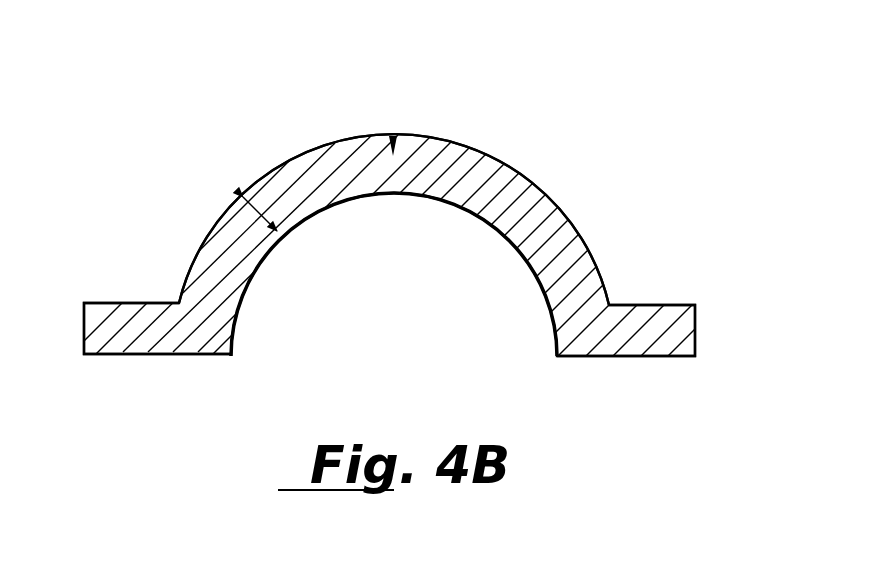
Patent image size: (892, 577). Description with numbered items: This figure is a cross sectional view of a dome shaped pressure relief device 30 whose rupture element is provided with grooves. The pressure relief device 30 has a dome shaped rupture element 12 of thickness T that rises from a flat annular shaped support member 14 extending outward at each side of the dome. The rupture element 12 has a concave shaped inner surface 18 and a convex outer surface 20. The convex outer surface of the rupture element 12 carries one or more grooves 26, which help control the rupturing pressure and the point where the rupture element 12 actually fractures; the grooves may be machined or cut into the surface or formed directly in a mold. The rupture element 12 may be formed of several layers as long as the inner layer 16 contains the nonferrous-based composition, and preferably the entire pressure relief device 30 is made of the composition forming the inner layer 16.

The rupture element 12 is at (513, 197).
The support member 14 is at (107, 325).
The inner layer 16 is at (460, 173).
The inner surface 18 is at (260, 259).
The outer surface 20 is at (336, 139).
The grooves 26 is at (402, 137).
The pressure relief device 30 is at (759, 315).
The thickness T is at (261, 214).